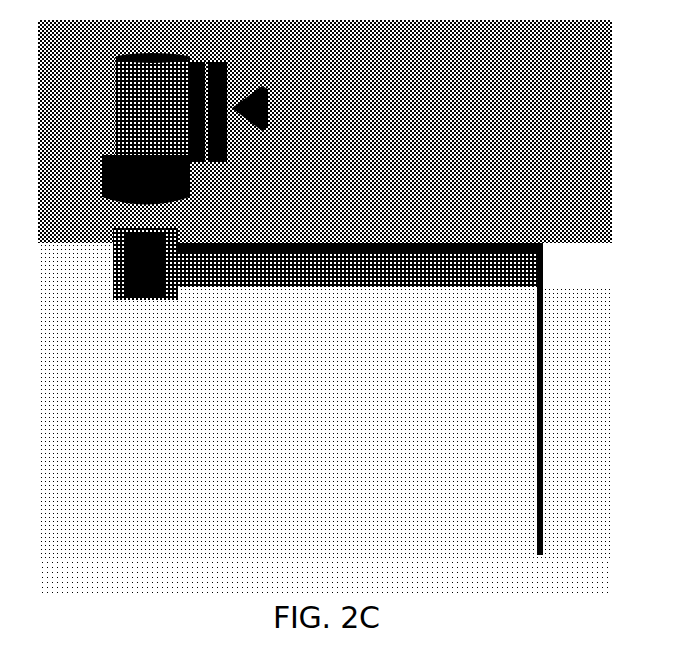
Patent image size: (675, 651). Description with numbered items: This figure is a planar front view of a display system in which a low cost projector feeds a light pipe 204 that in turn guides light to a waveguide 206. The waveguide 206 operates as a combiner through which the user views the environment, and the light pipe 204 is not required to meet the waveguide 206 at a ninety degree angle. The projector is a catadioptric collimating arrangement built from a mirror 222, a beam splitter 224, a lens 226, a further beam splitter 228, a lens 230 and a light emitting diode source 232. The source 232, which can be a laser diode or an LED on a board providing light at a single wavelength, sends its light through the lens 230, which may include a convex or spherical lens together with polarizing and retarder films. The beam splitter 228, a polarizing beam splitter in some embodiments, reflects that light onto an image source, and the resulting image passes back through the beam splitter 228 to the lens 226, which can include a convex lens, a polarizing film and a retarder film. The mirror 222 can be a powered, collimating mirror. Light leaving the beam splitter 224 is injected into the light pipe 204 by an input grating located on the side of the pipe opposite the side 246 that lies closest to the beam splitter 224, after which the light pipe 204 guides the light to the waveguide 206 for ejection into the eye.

The light pipe 204 is at (452, 243).
The waveguide 206 is at (543, 436).
The mirror 222 is at (119, 287).
The beam splitter 224 is at (113, 236).
The lens 226 is at (95, 152).
The beam splitter 228 is at (108, 88).
The lens 230 is at (260, 162).
The light emitting diode source 232 is at (262, 96).
The side 246 is at (336, 243).